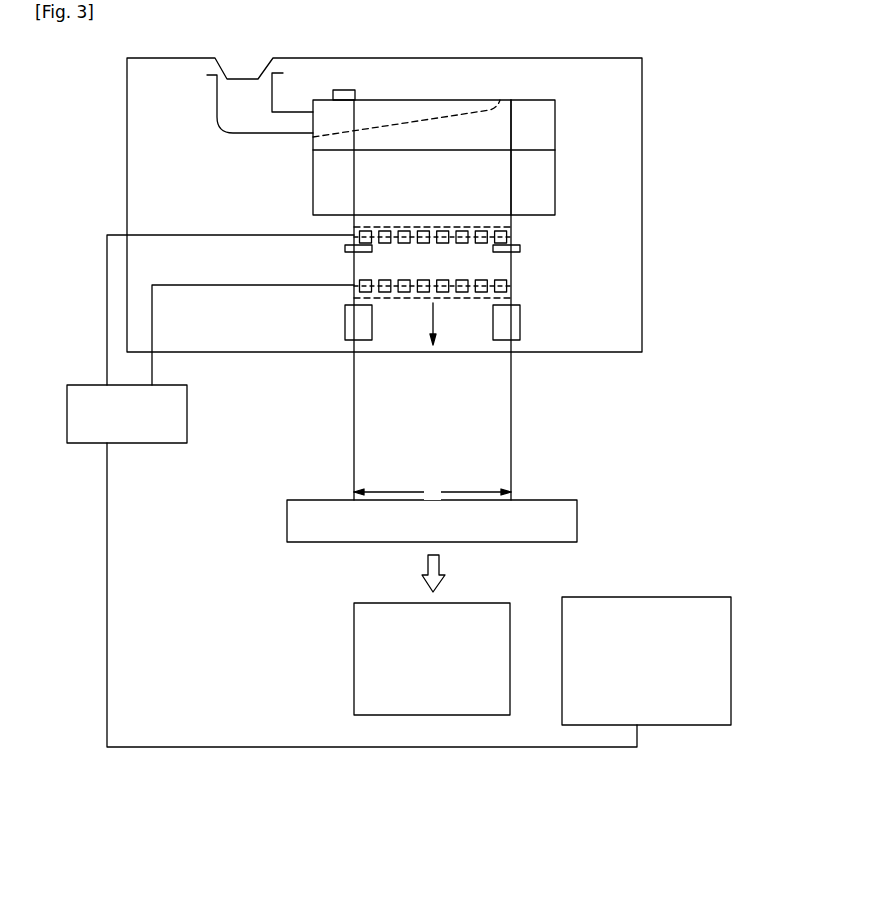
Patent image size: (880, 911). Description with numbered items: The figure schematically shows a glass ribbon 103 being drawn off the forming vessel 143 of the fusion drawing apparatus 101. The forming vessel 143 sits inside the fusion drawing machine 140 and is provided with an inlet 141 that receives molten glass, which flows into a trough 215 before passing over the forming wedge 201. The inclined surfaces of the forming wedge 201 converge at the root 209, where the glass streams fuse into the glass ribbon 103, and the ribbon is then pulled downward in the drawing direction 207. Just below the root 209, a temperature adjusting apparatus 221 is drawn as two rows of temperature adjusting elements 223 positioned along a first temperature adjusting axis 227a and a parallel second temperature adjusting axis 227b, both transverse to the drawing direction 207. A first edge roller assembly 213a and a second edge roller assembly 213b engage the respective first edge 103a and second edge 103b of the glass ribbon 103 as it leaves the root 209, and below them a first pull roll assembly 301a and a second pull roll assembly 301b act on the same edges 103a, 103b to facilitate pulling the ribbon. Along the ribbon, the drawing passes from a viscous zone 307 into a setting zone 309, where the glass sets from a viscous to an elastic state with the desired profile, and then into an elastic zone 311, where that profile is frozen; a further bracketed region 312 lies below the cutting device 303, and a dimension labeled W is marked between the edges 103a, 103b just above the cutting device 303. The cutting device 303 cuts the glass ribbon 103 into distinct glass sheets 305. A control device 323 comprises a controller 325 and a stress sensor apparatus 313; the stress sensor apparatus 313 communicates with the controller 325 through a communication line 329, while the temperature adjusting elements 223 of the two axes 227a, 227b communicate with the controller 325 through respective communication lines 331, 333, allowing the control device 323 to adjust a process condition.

The fusion drawing apparatus 101 is at (653, 142).
The fusion drawing machine 140 is at (643, 81).
The inlet 141 is at (217, 98).
The forming vessel 143 is at (562, 95).
The forming wedge 201 is at (507, 100).
The trough 215 is at (419, 120).
The temperature adjusting elements 223 is at (472, 234).
The root 209 is at (433, 224).
The first temperature adjusting axis 227a is at (522, 236).
The second temperature adjusting axis 227b is at (522, 284).
The temperature adjusting apparatus 221 is at (587, 215).
The first edge roller assembly 213a is at (372, 251).
The second edge roller assembly 213b is at (493, 251).
The first pull roll assembly 301a is at (372, 333).
The second pull roll assembly 301b is at (518, 332).
The drawing direction 207 is at (433, 320).
The viscous zone 307 is at (307, 215).
The setting zone 309 is at (307, 238).
The elastic zone 311 is at (307, 300).
The fourth region 312 is at (307, 545).
The communication line 331 is at (177, 233).
The communication line 333 is at (200, 284).
The controller 325 is at (84, 385).
The control device 323 is at (79, 453).
The communication line 329 is at (172, 748).
The first edge 103a is at (354, 432).
The second edge 103b is at (511, 427).
The glass ribbon 103 is at (500, 460).
The cutting device 303 is at (588, 517).
The glass sheets 305 is at (497, 603).
The stress sensor apparatus 313 is at (681, 597).
The width W is at (432, 492).